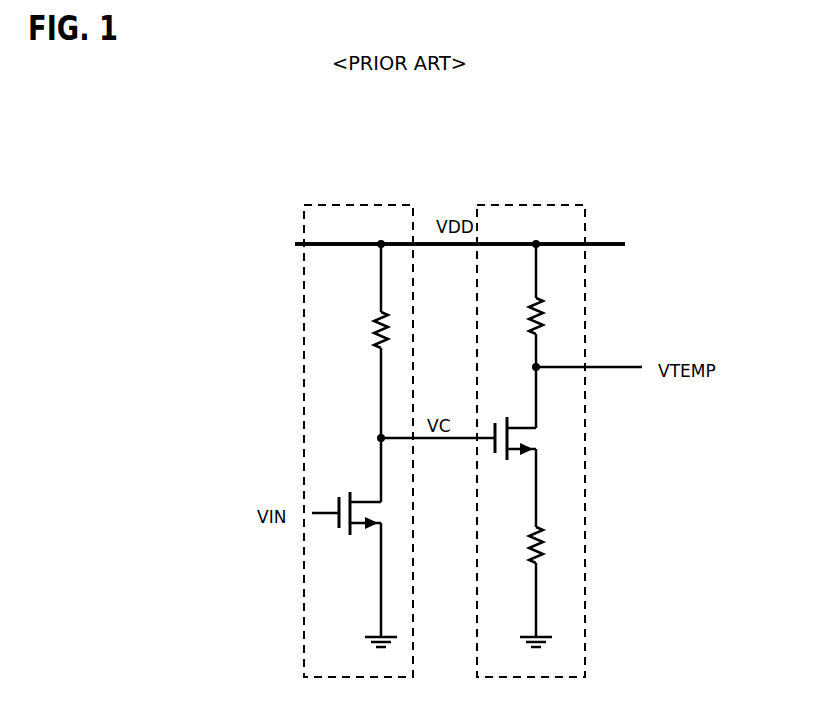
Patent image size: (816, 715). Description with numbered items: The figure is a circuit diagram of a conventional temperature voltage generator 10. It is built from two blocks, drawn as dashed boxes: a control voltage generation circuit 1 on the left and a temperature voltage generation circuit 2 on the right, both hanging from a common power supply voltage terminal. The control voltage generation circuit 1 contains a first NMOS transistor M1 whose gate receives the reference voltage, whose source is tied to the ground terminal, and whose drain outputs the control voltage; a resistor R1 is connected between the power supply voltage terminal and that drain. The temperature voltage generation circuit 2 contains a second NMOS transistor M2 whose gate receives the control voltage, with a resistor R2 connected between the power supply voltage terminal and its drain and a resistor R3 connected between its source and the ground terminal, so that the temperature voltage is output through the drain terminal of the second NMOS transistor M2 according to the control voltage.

The temperature voltage generator 10 is at (121, 201).
The control voltage generation circuit 1 is at (362, 204).
The temperature voltage generation circuit 2 is at (524, 204).
The resistor R1 is at (368, 330).
The resistor R2 is at (524, 316).
The resistor R3 is at (523, 545).
The first NMOS transistor M1 is at (346, 499).
The second NMOS transistor M2 is at (514, 426).